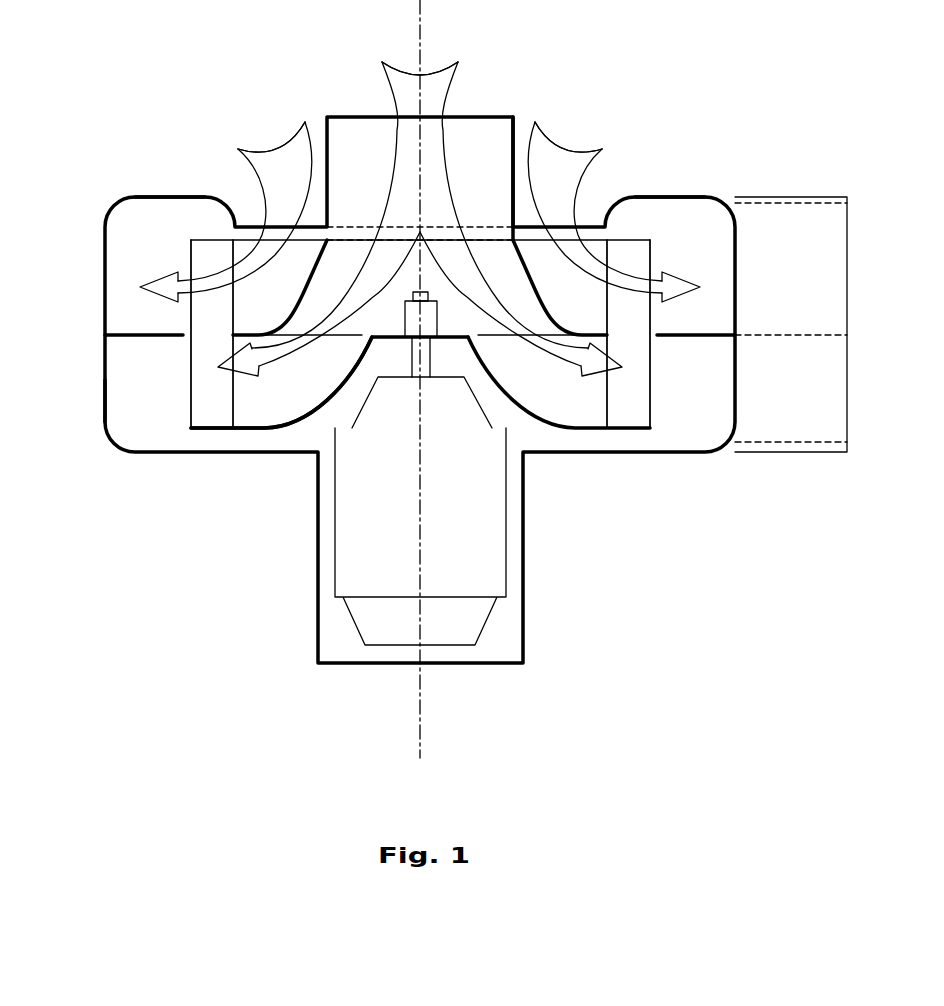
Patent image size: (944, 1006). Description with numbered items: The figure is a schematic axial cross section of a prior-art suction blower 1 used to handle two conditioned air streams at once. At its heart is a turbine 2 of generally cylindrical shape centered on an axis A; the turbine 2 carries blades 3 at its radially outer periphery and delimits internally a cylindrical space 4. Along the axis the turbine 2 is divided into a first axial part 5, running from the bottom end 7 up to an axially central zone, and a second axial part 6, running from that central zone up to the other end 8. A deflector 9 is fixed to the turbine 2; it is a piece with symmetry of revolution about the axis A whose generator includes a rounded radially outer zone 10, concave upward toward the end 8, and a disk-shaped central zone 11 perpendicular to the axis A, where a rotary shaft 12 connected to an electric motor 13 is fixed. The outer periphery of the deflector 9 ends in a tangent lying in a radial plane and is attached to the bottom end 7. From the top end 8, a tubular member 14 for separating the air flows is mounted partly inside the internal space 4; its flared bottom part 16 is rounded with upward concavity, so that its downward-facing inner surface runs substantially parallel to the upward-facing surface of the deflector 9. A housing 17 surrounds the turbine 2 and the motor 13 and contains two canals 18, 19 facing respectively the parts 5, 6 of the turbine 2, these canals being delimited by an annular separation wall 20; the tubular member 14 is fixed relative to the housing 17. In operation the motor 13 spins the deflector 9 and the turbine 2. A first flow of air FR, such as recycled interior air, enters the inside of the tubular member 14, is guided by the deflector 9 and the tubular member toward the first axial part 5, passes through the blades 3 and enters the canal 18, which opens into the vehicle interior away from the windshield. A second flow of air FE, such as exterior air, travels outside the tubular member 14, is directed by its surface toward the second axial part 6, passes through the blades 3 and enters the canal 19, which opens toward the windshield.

The suction blower 1 is at (693, 92).
The turbine 2 is at (628, 413).
The blades 3 is at (628, 334).
The cylindrical space 4 is at (558, 407).
The first axial part 5 is at (210, 418).
The second axial part 6 is at (203, 318).
The end of the turbine 7 is at (208, 420).
The end of the turbine 8 is at (207, 240).
The deflector 9 is at (322, 410).
The rounded radially outer zone 10 is at (281, 382).
The central zone 11 is at (388, 337).
The rotary shaft 12 is at (425, 368).
The electric motor 13 is at (487, 552).
The tubular member 14 is at (517, 125).
The bottom part 16 is at (528, 272).
The housing 17 is at (692, 195).
The canal 18 is at (127, 410).
The canal 19 is at (132, 234).
The annular separation wall 20 is at (143, 337).
The axis A is at (420, 733).
The first flow of air FR is at (404, 80).
The second flow of air FE is at (284, 157).